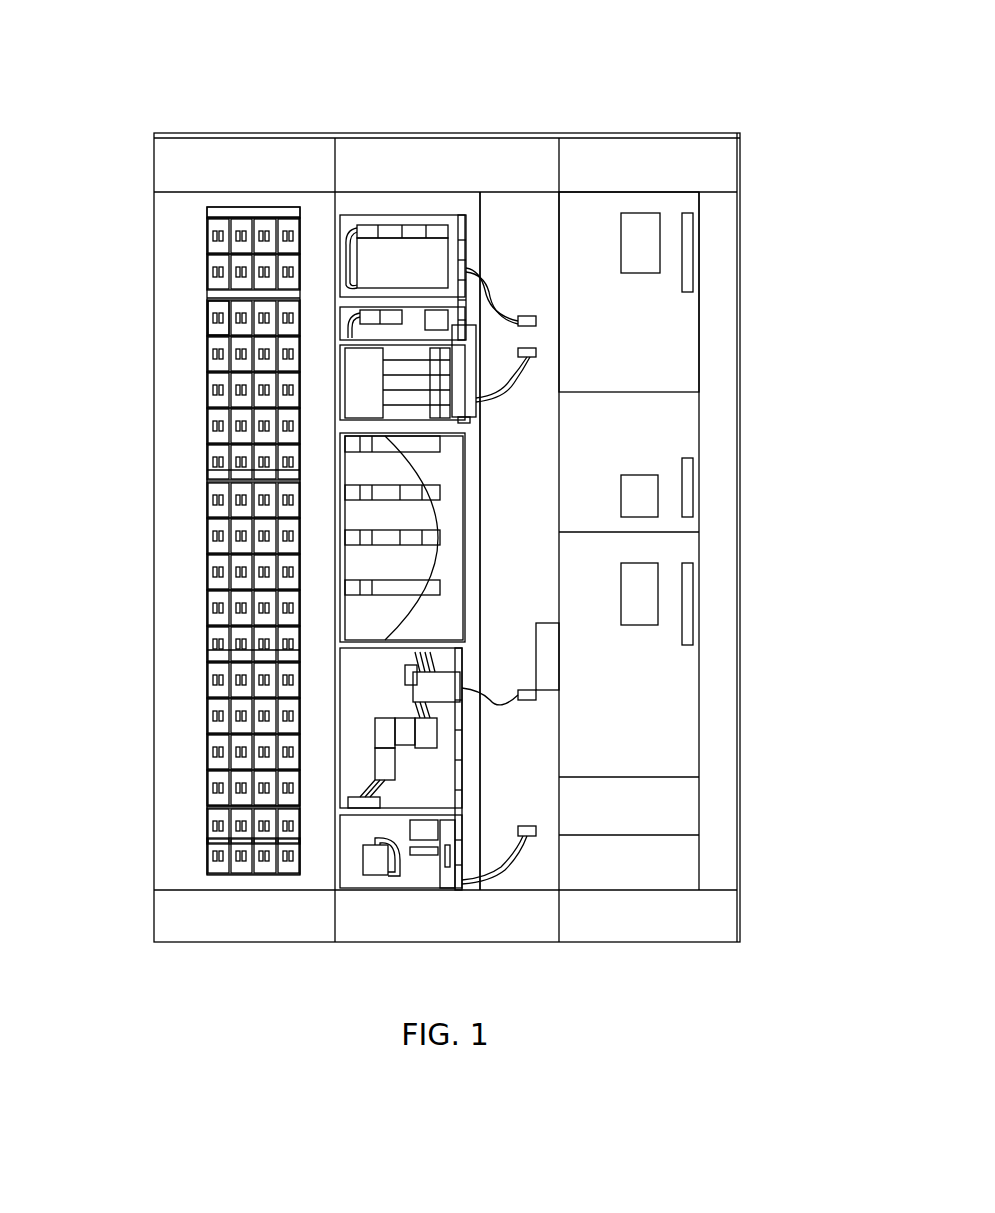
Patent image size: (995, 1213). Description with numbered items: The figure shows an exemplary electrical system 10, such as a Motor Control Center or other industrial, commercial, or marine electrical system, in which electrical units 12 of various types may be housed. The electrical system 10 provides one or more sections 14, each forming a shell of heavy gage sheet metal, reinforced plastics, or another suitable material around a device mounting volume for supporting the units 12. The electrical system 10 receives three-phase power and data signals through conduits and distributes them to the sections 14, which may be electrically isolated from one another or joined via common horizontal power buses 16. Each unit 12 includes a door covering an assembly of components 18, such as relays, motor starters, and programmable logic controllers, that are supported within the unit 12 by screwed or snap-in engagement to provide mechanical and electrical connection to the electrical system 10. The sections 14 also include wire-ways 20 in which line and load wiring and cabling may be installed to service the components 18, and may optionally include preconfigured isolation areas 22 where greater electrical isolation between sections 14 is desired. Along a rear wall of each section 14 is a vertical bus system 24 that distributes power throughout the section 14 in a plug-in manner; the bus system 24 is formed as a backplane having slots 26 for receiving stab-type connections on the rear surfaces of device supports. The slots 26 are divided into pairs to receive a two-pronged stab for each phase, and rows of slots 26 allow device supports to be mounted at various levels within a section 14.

The electrical system 10 is at (731, 114).
The electrical units 12 is at (684, 355).
The sections 14 is at (602, 168).
The common horizontal power buses 16 is at (360, 508).
The components 18 is at (402, 357).
The wire-ways 20 is at (313, 442).
The isolation areas 22 is at (530, 440).
The vertical bus system 24 is at (200, 246).
The slots 26 is at (218, 325).